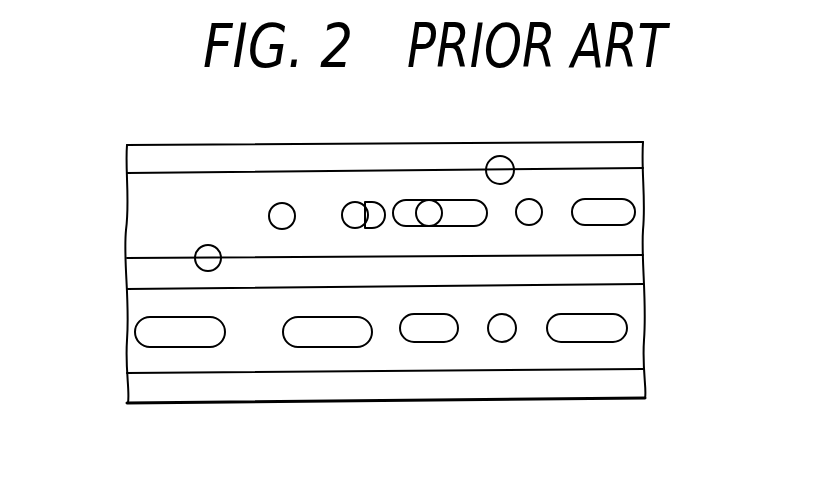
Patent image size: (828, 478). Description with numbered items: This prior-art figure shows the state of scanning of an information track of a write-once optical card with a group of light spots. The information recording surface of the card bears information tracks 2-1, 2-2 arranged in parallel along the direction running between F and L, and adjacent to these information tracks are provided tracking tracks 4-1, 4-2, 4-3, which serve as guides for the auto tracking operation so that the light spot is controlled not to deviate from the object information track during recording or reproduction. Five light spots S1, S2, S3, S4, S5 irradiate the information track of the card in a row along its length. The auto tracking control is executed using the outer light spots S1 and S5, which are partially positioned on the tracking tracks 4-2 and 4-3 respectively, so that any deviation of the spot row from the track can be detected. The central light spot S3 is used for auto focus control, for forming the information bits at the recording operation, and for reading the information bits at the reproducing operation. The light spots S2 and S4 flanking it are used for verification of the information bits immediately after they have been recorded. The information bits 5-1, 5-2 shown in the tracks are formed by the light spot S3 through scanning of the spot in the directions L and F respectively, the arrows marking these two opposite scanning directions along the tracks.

The tracking track 4-1 is at (628, 383).
The tracking track 4-2 is at (628, 270).
The tracking track 4-3 is at (630, 150).
The information track 2-1 is at (338, 375).
The information track 2-2 is at (447, 182).
The information bit 5-1 is at (312, 348).
The information bit 5-2 is at (533, 199).
The light spot S1 is at (208, 245).
The light spot S2 is at (282, 203).
The light spot S3 is at (355, 202).
The light spot S4 is at (429, 200).
The light spot S5 is at (500, 156).
The scanning direction F is at (147, 218).
The scanning direction L is at (630, 323).